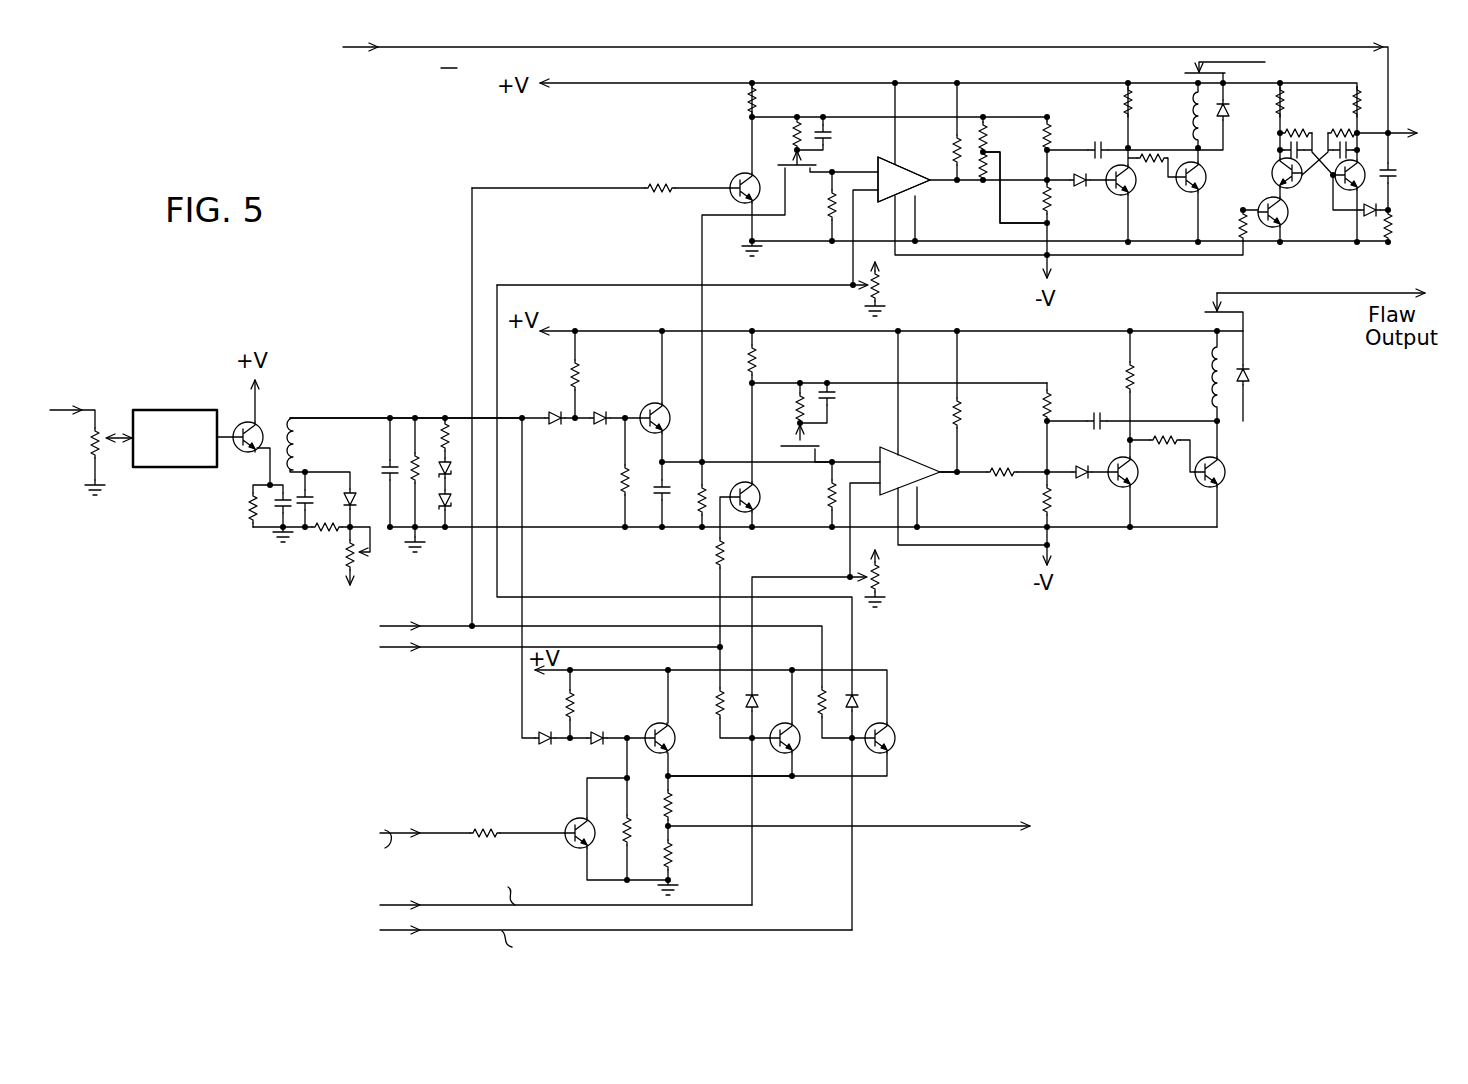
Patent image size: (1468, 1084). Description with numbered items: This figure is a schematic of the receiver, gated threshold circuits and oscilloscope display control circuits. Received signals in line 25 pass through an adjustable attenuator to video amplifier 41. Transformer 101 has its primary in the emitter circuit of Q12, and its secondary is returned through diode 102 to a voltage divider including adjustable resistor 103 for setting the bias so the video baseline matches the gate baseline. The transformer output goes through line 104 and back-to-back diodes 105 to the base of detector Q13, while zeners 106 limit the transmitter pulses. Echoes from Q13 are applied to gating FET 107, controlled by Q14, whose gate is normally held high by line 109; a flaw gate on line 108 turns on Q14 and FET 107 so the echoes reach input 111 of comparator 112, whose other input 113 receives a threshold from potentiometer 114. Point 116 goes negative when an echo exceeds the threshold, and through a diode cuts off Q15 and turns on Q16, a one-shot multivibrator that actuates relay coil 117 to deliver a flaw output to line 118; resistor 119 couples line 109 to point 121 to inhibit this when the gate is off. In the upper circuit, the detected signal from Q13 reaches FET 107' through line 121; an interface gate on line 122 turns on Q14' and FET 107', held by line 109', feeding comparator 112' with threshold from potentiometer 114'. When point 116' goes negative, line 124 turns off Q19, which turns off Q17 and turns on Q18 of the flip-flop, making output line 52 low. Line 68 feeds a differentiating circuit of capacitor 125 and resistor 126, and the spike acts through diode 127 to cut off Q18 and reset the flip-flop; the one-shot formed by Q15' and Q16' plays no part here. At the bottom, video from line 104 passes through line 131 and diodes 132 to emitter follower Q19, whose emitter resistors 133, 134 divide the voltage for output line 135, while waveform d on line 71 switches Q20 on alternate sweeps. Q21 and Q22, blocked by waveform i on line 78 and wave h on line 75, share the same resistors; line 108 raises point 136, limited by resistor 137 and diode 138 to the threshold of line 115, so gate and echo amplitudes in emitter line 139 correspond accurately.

The line 25 is at (63, 410).
The video amplifier 41 is at (188, 410).
The output line 52 is at (1388, 133).
The line 68 is at (380, 47).
The line 71 is at (458, 832).
The line 75 is at (430, 931).
The line 78 is at (470, 905).
The transformer 101 is at (272, 416).
The diode 102 is at (348, 488).
The adjustable resistor 103 is at (346, 560).
The line 104 is at (357, 416).
The back-to-back diodes 105 is at (606, 447).
The zeners 106 is at (455, 470).
The gating FET 107 is at (802, 470).
The FET gate 107' is at (828, 179).
The line 108 is at (392, 650).
The line 109 is at (899, 363).
The line 109' is at (899, 102).
The input 111 is at (870, 458).
The comparator 112 is at (916, 462).
The comparator 112' is at (913, 164).
The input 113 is at (872, 484).
The potentiometer 114 is at (902, 567).
The potentiometer 114' is at (904, 278).
The threshold line 115 is at (805, 560).
The point 116 is at (981, 495).
The point 116' is at (996, 196).
The relay coil 117 is at (1210, 390).
The line 118 is at (1322, 293).
The resistor 119 is at (1053, 398).
The point 121 is at (702, 256).
The line 122 is at (400, 626).
The line 124 is at (1000, 222).
The capacitor 125 is at (1393, 172).
The resistor 126 is at (1395, 226).
The diode 127 is at (1368, 218).
The line 131 is at (525, 578).
The back-to-back diodes 132 is at (592, 764).
The emitter resistor 133 is at (680, 803).
The emitter resistor 134 is at (680, 855).
The output line 135 is at (918, 826).
The point 136 is at (752, 742).
The resistor 137 is at (716, 705).
The diode 138 is at (790, 683).
The emitter line 139 is at (782, 780).
The transistor Q12 is at (268, 462).
The detector Q13 is at (645, 404).
The transistor Q14 is at (776, 503).
The transistor Q14' is at (616, 170).
The transistor Q15 is at (1121, 487).
The transistor Q15' is at (1129, 191).
The transistor Q16 is at (1239, 477).
The transistor Q16' is at (1221, 179).
The transistor Q17 is at (1274, 165).
The transistor Q18 is at (1365, 186).
The transistor Q19 is at (1288, 213).
The transistor Q20 is at (568, 828).
The transistor Q21 is at (795, 746).
The transistor Q22 is at (895, 740).